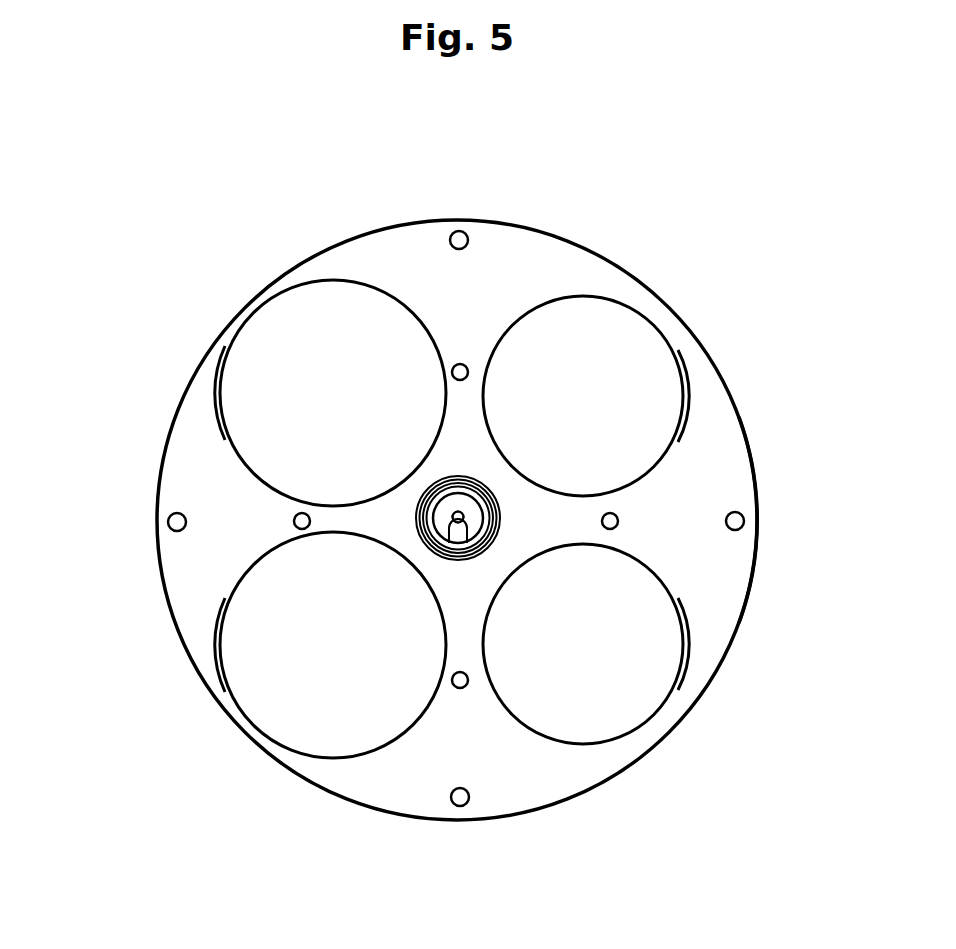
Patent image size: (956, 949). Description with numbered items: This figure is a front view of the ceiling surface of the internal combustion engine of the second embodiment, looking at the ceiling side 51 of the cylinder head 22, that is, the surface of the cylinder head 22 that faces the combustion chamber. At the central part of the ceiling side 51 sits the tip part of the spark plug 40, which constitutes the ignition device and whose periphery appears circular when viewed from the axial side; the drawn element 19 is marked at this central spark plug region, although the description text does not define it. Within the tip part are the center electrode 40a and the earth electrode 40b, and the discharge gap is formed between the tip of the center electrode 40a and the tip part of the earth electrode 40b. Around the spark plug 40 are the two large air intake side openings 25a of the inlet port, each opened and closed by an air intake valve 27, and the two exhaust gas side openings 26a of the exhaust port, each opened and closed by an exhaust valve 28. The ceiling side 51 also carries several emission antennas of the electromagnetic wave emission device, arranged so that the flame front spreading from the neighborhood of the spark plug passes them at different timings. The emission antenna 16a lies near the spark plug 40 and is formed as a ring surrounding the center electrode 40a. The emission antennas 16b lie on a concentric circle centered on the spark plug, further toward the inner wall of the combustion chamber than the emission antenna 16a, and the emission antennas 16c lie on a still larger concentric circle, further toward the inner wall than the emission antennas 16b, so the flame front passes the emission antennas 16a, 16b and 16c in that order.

The cylinder head 22 is at (525, 255).
The ceiling side 51 is at (727, 470).
The air intake valve 27 is at (283, 362).
The air intake side opening 25a is at (221, 408).
The exhaust valve 28 is at (623, 347).
The exhaust gas side opening 26a is at (683, 368).
The emission antenna 16c is at (459, 231).
The emission antenna 16b is at (461, 363).
The emission antenna 16a is at (481, 487).
The spark plug 19 is at (462, 478).
The spark plug 40 is at (430, 490).
The center electrode 40a is at (472, 516).
The earth electrode 40b is at (487, 553).